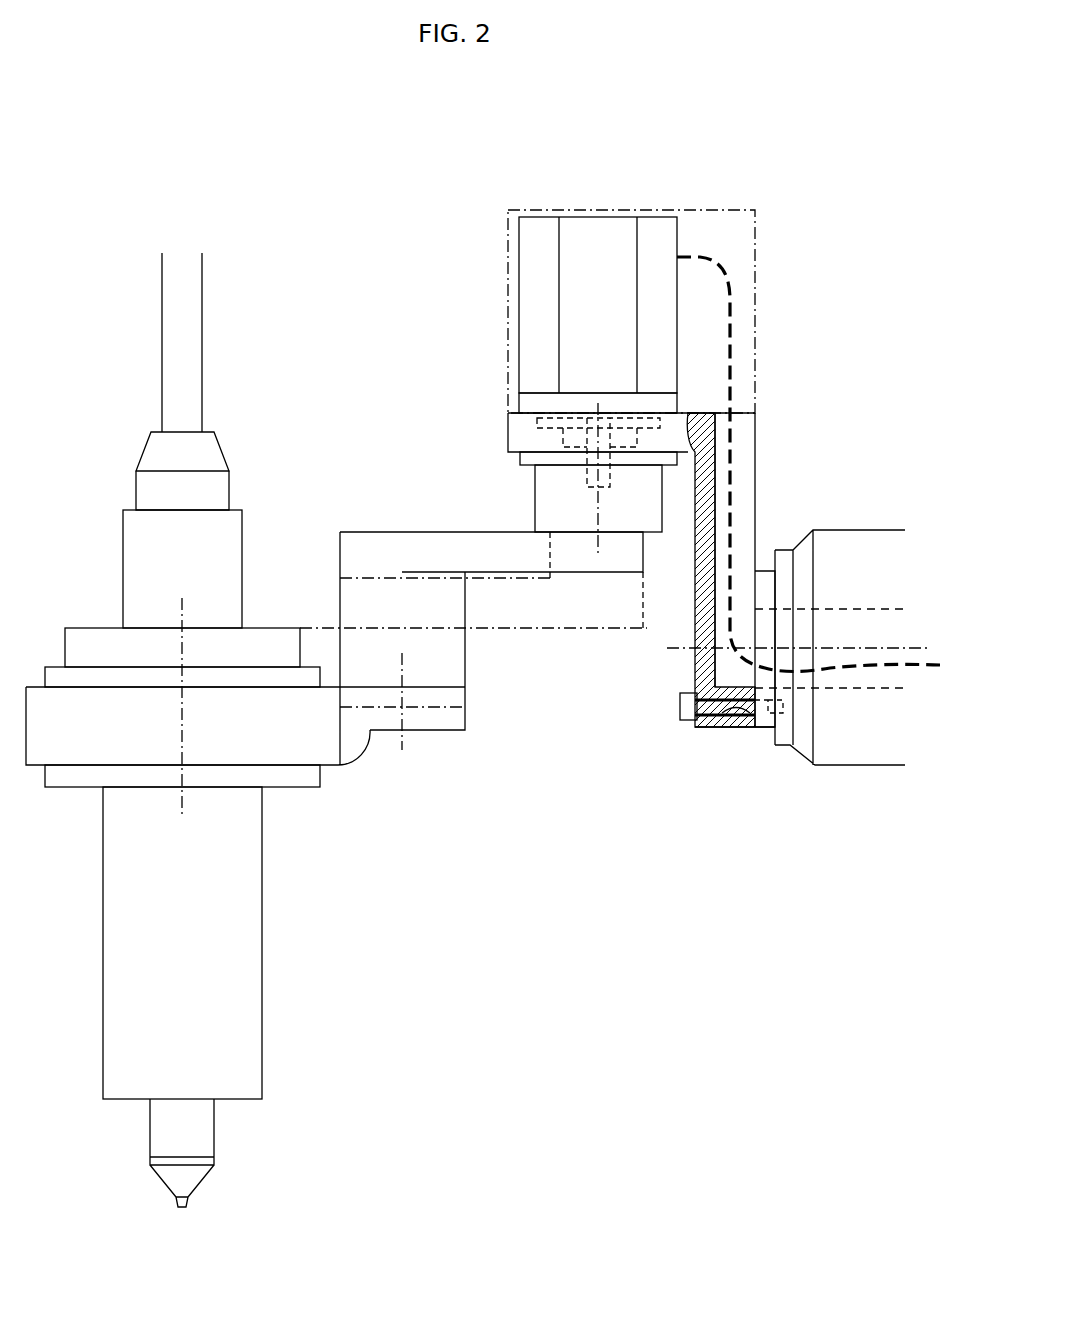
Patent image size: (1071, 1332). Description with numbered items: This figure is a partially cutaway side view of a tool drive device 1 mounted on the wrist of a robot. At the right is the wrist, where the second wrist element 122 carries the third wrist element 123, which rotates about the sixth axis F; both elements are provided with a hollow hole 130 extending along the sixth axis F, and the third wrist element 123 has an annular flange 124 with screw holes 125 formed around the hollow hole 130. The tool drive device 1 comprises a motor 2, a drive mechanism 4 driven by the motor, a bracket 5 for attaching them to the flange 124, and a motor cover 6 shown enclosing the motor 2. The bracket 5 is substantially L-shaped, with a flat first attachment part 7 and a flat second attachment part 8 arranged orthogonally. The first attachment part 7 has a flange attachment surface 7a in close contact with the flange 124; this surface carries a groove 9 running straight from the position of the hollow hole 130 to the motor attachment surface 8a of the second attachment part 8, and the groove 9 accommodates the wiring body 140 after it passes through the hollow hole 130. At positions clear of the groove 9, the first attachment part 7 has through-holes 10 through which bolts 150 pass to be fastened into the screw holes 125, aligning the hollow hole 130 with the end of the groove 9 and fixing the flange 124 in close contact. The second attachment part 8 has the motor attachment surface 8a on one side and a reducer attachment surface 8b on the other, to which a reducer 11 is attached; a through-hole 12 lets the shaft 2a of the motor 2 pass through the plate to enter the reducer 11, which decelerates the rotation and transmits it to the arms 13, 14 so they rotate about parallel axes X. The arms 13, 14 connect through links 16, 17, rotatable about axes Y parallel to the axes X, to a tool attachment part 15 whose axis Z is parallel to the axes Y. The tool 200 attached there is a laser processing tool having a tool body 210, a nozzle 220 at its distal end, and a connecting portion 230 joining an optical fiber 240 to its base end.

The tool drive device 1 is at (316, 202).
The motor 2 is at (598, 215).
The shaft 2a is at (585, 477).
The drive mechanism 4 is at (610, 490).
The bracket 5 is at (680, 676).
The motor cover 6 is at (757, 223).
The first attachment part 7 is at (720, 604).
The flange attachment surface 7a is at (757, 433).
The second attachment part 8 is at (508, 430).
The motor attachment surface 8a is at (533, 412).
The reducer attachment surface 8b is at (520, 466).
The groove 9 is at (715, 468).
The through-hole 10 is at (720, 727).
The reducer 11 is at (535, 498).
The through-hole 12 is at (618, 425).
The arm 13 is at (358, 530).
The arm 14 is at (488, 632).
The tool attachment part 15 is at (58, 787).
The link 16 is at (418, 730).
The link 17 is at (320, 627).
The second wrist element 122 is at (842, 530).
The third wrist element 123 is at (766, 558).
The flange 124 is at (763, 727).
The screw hole 125 is at (783, 713).
The hollow hole 130 is at (880, 623).
The wiring body 140 is at (730, 293).
The bolt 150 is at (680, 705).
The tool 200 is at (245, 756).
The tool body 210 is at (262, 930).
The nozzle 220 is at (165, 1188).
The connecting portion 230 is at (143, 450).
The optical fiber 240 is at (162, 327).
The axis X is at (598, 557).
The axis Y is at (400, 717).
The axis Z is at (182, 732).
The sixth axis F is at (917, 648).